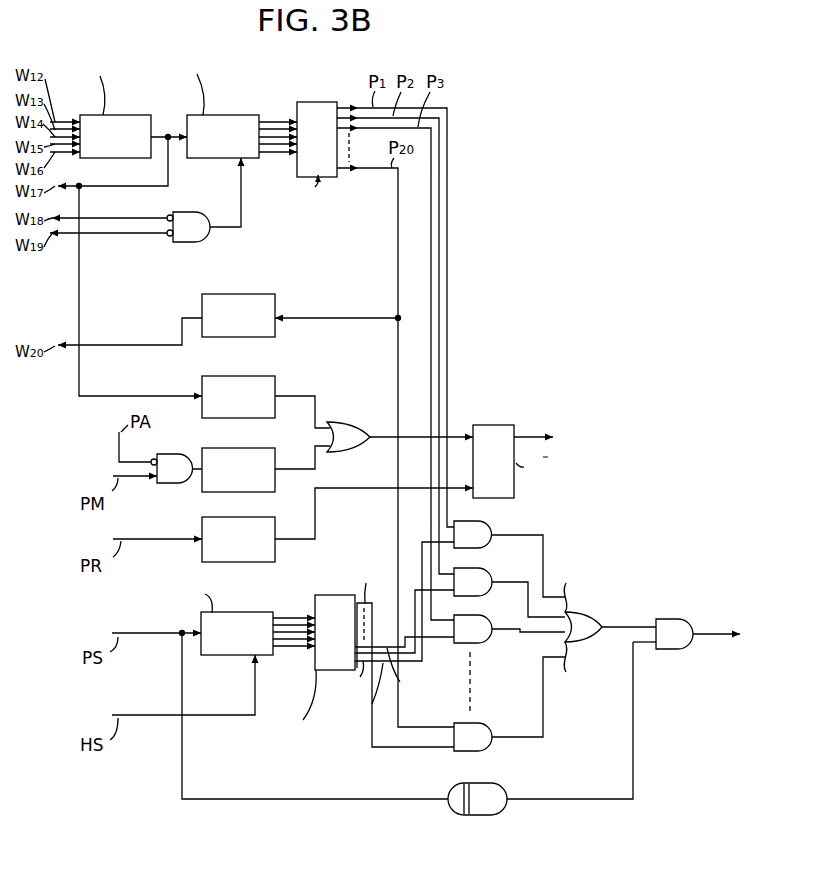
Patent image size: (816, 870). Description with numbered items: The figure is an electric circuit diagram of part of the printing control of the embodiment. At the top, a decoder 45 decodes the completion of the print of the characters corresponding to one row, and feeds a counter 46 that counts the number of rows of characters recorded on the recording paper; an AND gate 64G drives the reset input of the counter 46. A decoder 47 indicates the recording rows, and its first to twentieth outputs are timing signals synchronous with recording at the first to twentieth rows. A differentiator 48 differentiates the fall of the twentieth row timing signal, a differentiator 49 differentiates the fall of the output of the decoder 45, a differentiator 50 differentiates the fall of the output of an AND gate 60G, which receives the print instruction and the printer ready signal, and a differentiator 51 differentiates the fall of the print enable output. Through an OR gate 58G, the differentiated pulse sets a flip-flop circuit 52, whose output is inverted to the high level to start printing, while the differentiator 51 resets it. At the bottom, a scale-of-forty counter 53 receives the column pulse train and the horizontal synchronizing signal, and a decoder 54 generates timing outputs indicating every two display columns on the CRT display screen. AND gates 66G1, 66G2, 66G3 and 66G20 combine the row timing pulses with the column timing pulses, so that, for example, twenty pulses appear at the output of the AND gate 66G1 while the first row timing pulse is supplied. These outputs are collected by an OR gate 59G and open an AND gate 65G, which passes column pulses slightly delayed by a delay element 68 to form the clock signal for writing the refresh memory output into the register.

The decoder 45 is at (135, 115).
The counter 46 is at (245, 115).
The decoder 47 is at (320, 107).
The differentiator 48 is at (255, 295).
The differentiator 49 is at (255, 377).
The differentiator 50 is at (255, 449).
The differentiator 51 is at (259, 514).
The flip-flop circuit 52 is at (501, 425).
The counter 53 is at (264, 606).
The decoder 54 is at (333, 597).
The OR gate 58G is at (350, 422).
The OR gate 59G is at (594, 618).
The AND gate 60G is at (170, 484).
The AND gate 64G is at (197, 212).
The AND gate 65G is at (683, 618).
The AND gate 66G1 is at (492, 532).
The AND gate 66G2 is at (492, 580).
The AND gate 66G3 is at (493, 622).
The AND gate 66G20 is at (492, 724).
The delay element 68 is at (497, 792).